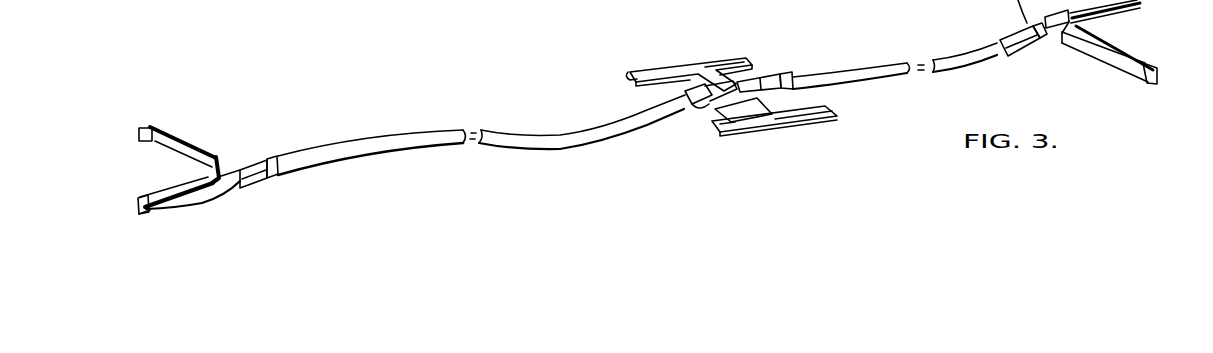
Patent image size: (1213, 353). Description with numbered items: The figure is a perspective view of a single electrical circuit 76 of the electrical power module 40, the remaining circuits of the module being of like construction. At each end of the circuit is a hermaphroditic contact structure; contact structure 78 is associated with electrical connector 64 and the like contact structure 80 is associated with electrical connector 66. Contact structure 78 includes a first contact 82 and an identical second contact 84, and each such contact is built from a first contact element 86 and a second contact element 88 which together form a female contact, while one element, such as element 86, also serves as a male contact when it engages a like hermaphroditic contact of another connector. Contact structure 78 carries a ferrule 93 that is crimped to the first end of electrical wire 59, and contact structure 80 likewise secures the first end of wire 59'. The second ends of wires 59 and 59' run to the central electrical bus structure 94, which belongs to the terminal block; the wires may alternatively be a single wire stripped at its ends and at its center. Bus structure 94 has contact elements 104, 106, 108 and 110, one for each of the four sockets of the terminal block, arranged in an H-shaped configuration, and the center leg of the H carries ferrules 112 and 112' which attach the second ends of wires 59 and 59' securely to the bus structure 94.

The electrical power module 40 is at (778, 130).
The electrical wire 59 is at (481, 130).
The electrical wire 59' is at (895, 58).
The electrical connector 64 is at (162, 159).
The electrical connector 66 is at (1080, 48).
The electrical circuit 76 is at (663, 62).
The hermaphroditic contact structure 78 is at (186, 146).
The hermaphroditic contact structure 80 is at (1094, 63).
The first contact 82 is at (211, 231).
The second contact 84 is at (193, 107).
The first contact element 86 is at (137, 199).
The second contact element 88 is at (137, 212).
The ferrule 93 is at (254, 166).
The electrical bus structure 94 is at (663, 62).
The contact element 104 is at (738, 128).
The contact element 106 is at (818, 120).
The contact element 108 is at (626, 75).
The contact element 110 is at (732, 62).
The ferrule 112 is at (696, 110).
The ferrule 112' is at (770, 65).